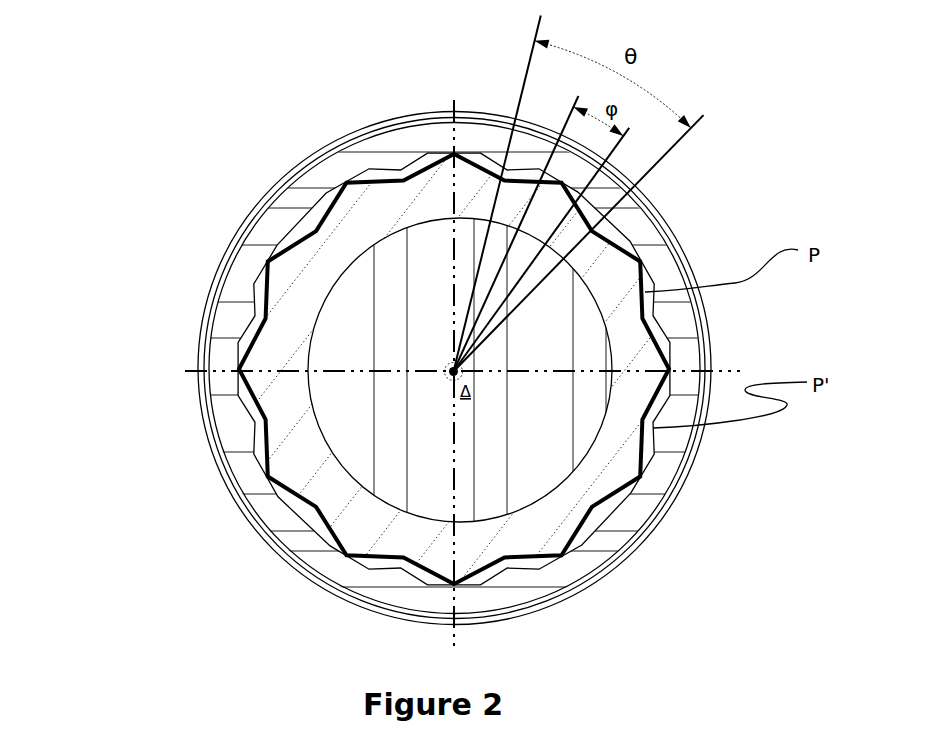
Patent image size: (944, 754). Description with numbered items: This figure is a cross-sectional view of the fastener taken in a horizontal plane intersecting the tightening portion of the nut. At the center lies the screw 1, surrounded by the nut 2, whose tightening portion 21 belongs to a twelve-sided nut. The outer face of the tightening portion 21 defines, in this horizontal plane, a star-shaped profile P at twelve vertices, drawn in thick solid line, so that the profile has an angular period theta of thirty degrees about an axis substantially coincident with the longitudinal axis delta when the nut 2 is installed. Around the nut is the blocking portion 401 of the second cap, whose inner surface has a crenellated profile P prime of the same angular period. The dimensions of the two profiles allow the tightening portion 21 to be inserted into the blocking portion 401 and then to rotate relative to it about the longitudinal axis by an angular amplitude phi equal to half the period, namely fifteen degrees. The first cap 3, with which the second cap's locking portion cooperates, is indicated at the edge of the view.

The screw 1 is at (460, 370).
The nut 2 is at (264, 286).
The tightening portion 21 is at (282, 443).
The blocking portion 401 is at (322, 173).
The first cap 3 is at (800, 753).